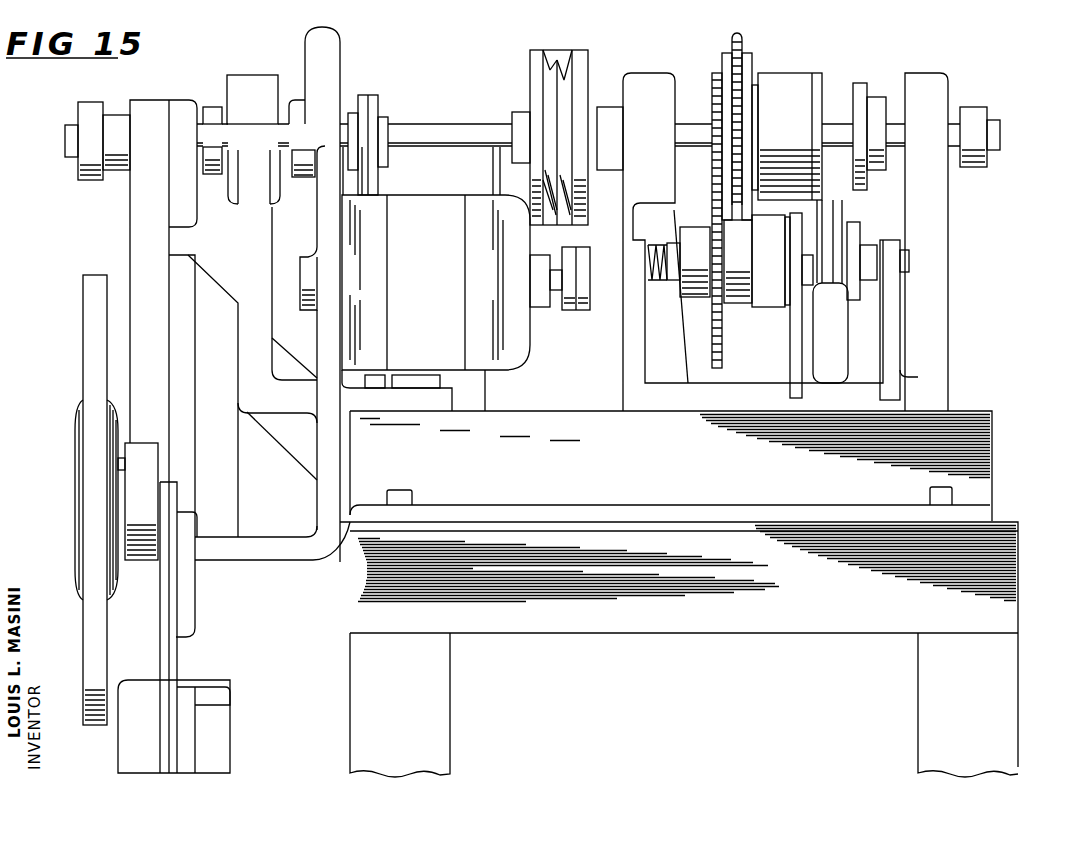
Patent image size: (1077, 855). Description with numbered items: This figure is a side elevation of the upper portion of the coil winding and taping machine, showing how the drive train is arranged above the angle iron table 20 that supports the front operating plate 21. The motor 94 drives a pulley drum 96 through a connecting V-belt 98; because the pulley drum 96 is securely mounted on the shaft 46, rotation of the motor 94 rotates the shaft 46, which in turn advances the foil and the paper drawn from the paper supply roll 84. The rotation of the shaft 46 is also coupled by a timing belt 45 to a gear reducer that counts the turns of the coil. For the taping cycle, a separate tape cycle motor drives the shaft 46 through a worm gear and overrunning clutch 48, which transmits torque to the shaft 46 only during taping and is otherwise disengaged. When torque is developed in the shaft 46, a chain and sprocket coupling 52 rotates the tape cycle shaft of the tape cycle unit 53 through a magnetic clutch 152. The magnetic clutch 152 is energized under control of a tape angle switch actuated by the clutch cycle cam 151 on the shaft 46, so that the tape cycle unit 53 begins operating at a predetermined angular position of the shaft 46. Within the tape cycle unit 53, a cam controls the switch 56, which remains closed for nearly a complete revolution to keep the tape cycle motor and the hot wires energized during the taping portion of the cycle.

The angle iron table 20 is at (1025, 596).
The front operating plate 21 is at (130, 227).
The timing belt 45 is at (368, 95).
The shaft 46 is at (435, 124).
The worm gear and overrunning clutch 48 is at (800, 126).
The chain and sprocket coupling 52 is at (708, 88).
The tape cycle unit 53 is at (665, 325).
The switch 56 is at (827, 363).
The paper supply roll 84 is at (83, 298).
The motor 94 is at (428, 286).
The pulley drum 96 is at (590, 82).
The V-belt 98 is at (580, 247).
The clutch cycle cam 151 is at (862, 79).
The magnetic clutch 152 is at (772, 308).